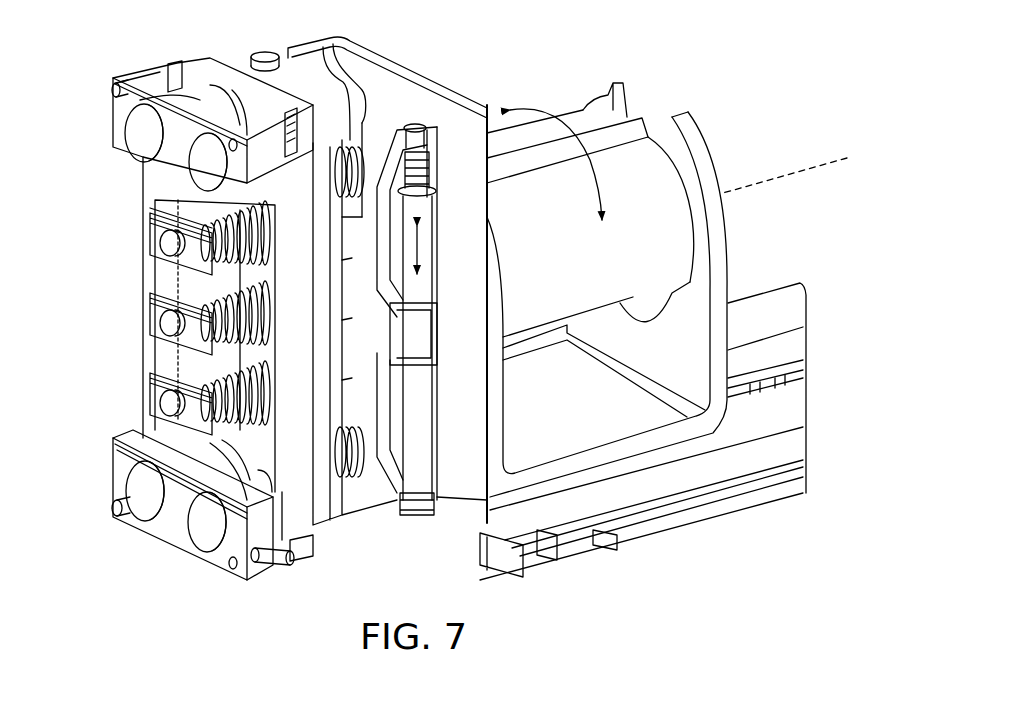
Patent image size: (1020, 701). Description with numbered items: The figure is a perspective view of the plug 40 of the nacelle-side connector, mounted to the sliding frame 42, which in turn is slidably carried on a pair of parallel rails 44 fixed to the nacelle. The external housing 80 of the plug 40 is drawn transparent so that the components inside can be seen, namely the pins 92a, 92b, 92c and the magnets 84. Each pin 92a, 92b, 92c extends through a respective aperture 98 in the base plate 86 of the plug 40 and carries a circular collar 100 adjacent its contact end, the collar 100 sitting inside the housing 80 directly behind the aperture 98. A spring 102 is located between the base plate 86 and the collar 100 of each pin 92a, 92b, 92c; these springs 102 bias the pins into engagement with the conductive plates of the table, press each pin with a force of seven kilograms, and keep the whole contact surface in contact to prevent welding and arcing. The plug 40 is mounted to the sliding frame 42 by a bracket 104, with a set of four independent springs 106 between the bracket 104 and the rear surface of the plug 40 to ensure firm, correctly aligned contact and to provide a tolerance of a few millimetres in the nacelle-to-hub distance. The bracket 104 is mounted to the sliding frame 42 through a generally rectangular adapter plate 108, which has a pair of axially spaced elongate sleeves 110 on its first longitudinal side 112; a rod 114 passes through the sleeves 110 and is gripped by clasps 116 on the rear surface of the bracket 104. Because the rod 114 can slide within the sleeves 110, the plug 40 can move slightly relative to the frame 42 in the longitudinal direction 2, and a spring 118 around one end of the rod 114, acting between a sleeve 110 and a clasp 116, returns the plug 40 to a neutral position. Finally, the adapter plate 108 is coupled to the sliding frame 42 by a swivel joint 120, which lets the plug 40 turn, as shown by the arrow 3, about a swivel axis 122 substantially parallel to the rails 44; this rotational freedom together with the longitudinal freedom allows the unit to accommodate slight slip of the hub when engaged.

The plug 40 is at (90, 356).
The base plate 86 is at (233, 72).
The magnets 84 is at (200, 162).
The pin 92a is at (135, 244).
The pin 92b is at (135, 325).
The pin 92c is at (135, 406).
The circular collar 100 is at (153, 218).
The external housing 80 is at (110, 467).
The spring 102 is at (212, 420).
The aperture 98 is at (311, 440).
The springs 106 is at (349, 148).
The bracket 104 is at (377, 127).
The spring 118 is at (417, 153).
The longitudinal direction 2 is at (417, 250).
The elongate sleeves 110 is at (417, 295).
The rod 114 is at (417, 348).
The clasps 116 is at (417, 503).
The adapter plate 108 is at (467, 130).
The first longitudinal side 112 is at (480, 457).
The rotational degree of freedom 3 is at (597, 167).
The swivel joint 120 is at (652, 105).
The swivel axis 122 is at (783, 173).
The sliding frame 42 is at (772, 307).
The parallel rails 44 is at (760, 490).